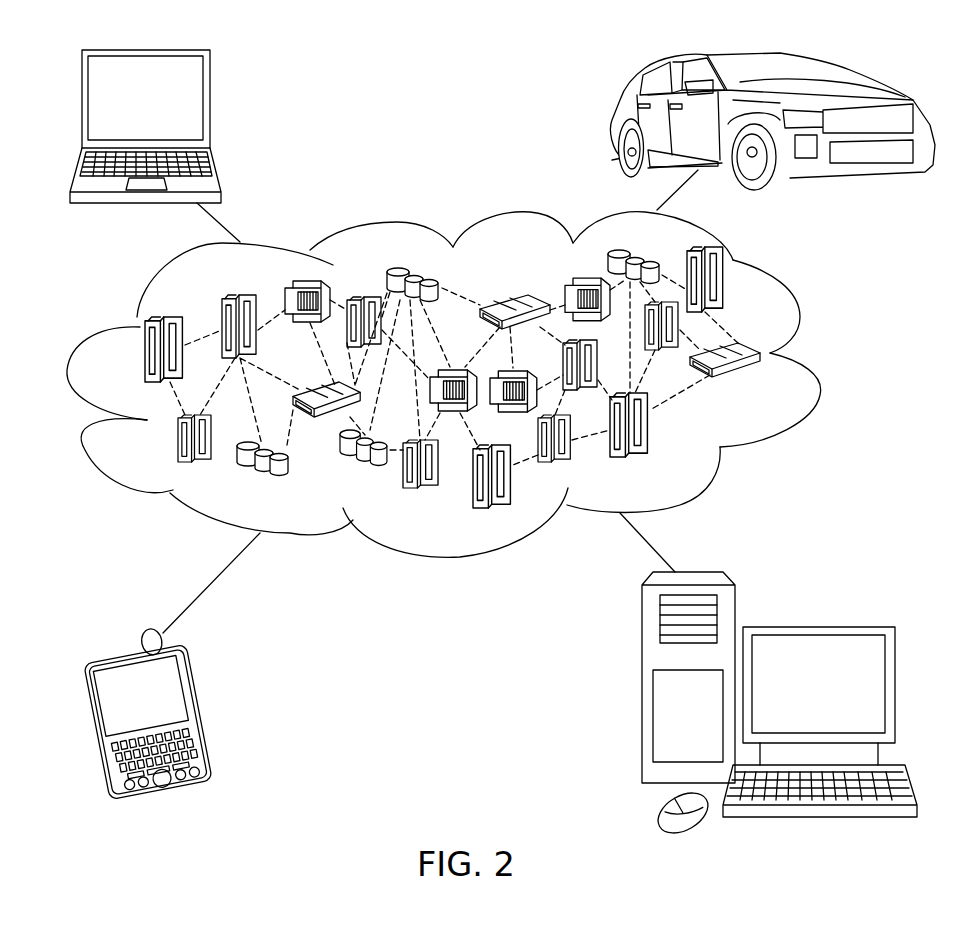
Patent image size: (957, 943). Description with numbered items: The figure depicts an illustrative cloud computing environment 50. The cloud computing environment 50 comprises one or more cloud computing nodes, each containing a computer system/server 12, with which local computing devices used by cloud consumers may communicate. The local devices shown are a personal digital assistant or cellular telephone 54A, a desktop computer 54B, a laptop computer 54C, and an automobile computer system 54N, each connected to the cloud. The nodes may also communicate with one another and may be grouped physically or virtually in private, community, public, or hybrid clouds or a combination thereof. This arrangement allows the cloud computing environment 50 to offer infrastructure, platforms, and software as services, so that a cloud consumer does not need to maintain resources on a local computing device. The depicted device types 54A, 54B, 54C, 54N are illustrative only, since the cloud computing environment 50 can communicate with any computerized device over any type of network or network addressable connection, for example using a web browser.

The computer system/server 12 is at (765, 387).
The cloud computing environment 50 is at (813, 358).
The personal digital assistant or cellular telephone 54A is at (198, 711).
The desktop computer 54B is at (817, 624).
The laptop computer 54C is at (210, 106).
The automobile computer system 54N is at (612, 125).